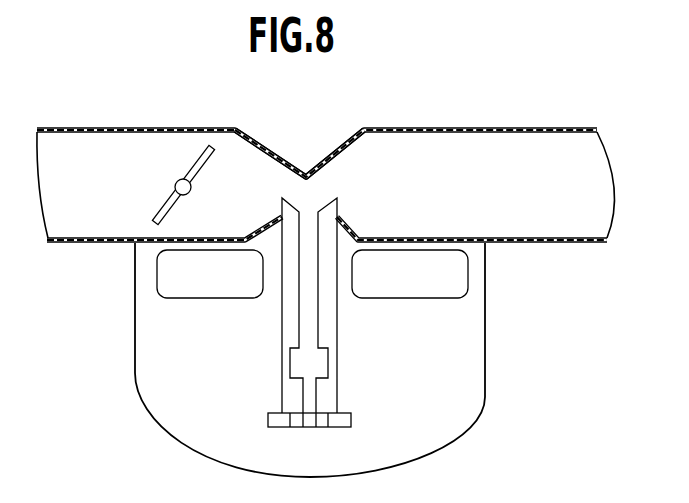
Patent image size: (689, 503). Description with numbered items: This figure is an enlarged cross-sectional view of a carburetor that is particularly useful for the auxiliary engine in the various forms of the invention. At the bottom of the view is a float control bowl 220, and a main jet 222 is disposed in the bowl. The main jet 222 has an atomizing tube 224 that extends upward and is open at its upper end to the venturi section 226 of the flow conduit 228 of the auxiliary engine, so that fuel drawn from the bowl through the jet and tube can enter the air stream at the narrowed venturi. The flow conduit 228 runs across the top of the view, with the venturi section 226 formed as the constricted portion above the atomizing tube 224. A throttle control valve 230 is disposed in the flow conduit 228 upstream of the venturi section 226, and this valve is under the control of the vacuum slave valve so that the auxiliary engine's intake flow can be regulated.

The float control bowl 220 is at (135, 372).
The main jet 222 is at (297, 428).
The atomizing tube 224 is at (338, 359).
The venturi section 226 is at (296, 170).
The flow conduit 228 is at (155, 127).
The throttle control valve 230 is at (163, 211).